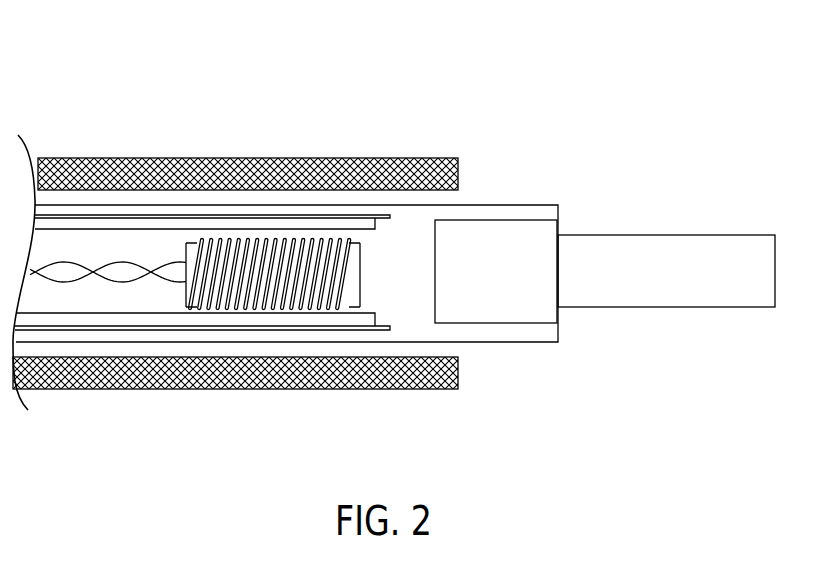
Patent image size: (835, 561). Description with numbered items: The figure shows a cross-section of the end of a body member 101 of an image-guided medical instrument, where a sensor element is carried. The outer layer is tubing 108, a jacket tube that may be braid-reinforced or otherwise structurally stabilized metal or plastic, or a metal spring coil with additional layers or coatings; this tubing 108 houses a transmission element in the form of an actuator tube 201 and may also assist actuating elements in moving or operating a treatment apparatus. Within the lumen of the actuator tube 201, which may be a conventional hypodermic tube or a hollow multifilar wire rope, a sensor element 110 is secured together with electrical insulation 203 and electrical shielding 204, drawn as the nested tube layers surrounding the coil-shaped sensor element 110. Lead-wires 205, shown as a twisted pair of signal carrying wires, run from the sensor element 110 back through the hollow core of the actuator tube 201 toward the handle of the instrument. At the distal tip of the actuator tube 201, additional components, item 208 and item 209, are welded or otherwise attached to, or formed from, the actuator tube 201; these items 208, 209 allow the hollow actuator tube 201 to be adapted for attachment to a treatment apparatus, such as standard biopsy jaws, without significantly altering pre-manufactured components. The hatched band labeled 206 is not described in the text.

The body member 101 is at (572, 86).
The tubing 108 is at (74, 158).
The electrical shielding 204 is at (117, 218).
The electrical insulation 203 is at (385, 328).
The lead-wires 205 is at (90, 280).
The sensor element 110 is at (353, 276).
The item 208 is at (518, 220).
The actuator tube 201 is at (520, 342).
The item 209 is at (720, 235).
The braided layer 206 is at (282, 389).